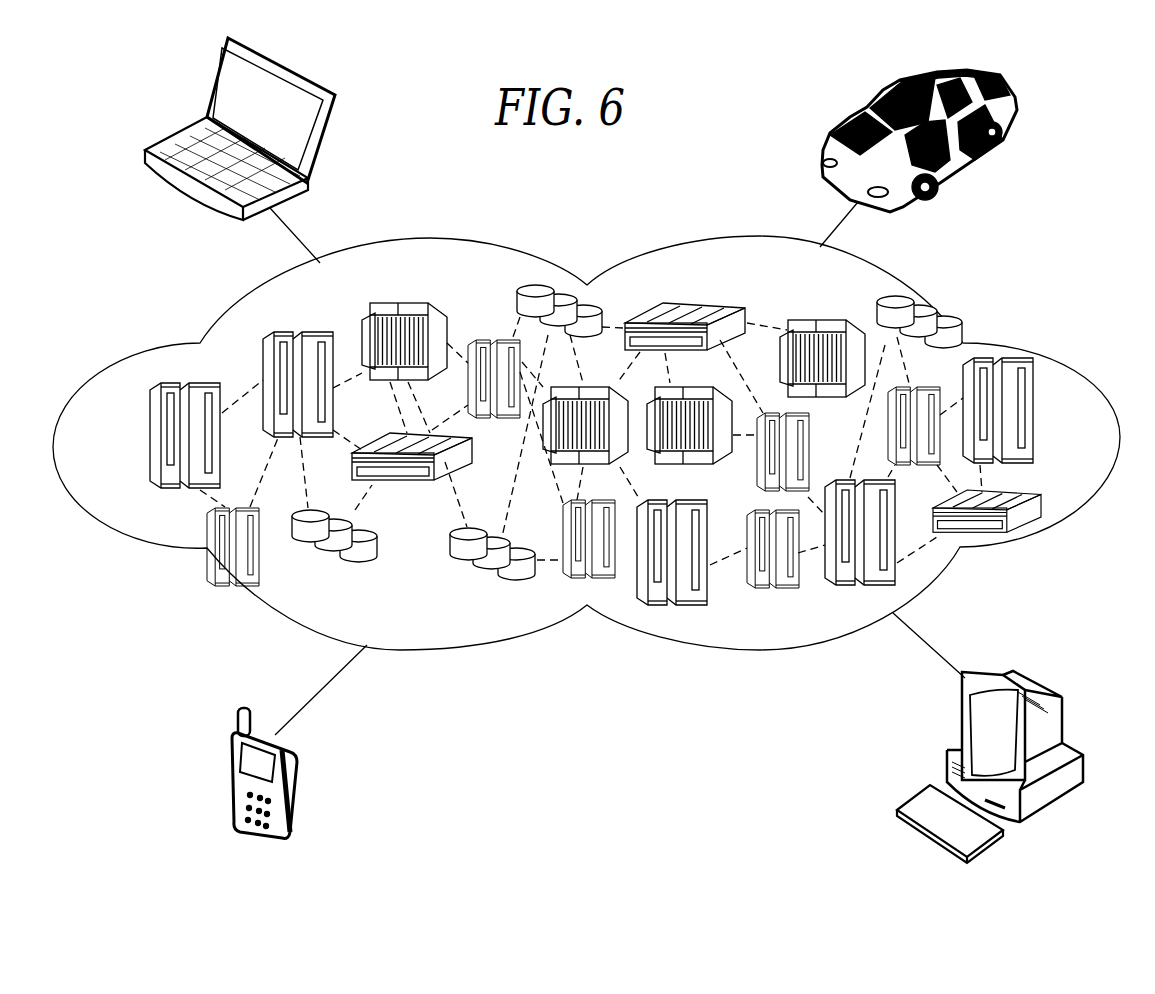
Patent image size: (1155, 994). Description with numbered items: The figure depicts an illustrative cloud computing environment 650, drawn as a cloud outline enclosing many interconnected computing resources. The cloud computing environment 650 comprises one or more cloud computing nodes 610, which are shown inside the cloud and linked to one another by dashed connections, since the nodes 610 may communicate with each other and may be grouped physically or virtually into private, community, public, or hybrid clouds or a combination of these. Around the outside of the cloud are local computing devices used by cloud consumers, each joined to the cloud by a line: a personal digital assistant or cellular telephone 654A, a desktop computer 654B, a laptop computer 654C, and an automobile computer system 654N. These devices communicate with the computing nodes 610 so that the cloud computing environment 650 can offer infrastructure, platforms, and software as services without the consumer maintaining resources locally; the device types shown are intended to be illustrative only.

The cloud computing environment 650 is at (1088, 366).
The cloud computing node 610 is at (1023, 532).
The personal digital assistant or cellular telephone 654A is at (298, 740).
The desktop computer 654B is at (954, 745).
The laptop computer 654C is at (188, 120).
The automobile computer system 654N is at (842, 134).